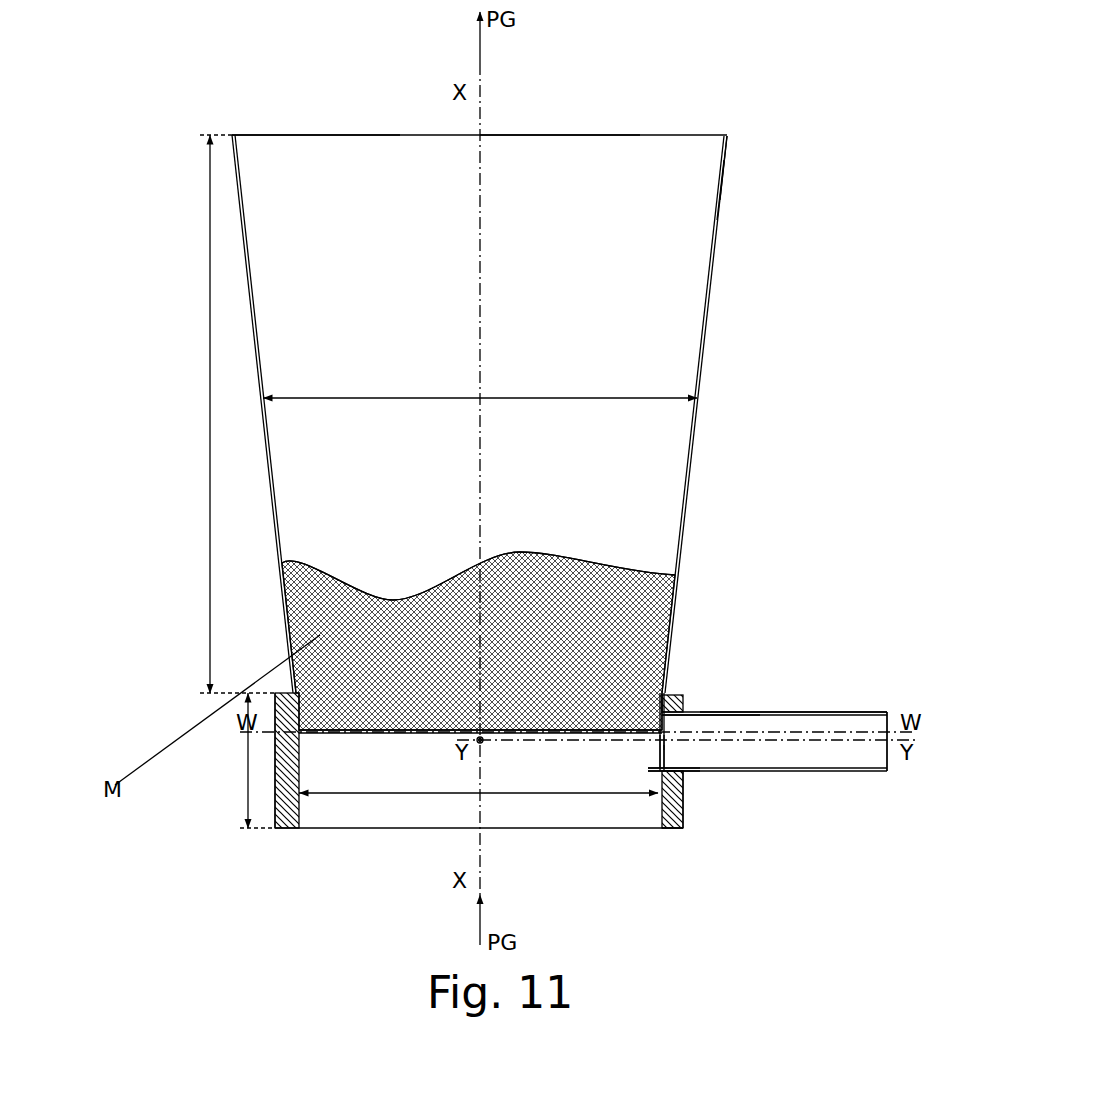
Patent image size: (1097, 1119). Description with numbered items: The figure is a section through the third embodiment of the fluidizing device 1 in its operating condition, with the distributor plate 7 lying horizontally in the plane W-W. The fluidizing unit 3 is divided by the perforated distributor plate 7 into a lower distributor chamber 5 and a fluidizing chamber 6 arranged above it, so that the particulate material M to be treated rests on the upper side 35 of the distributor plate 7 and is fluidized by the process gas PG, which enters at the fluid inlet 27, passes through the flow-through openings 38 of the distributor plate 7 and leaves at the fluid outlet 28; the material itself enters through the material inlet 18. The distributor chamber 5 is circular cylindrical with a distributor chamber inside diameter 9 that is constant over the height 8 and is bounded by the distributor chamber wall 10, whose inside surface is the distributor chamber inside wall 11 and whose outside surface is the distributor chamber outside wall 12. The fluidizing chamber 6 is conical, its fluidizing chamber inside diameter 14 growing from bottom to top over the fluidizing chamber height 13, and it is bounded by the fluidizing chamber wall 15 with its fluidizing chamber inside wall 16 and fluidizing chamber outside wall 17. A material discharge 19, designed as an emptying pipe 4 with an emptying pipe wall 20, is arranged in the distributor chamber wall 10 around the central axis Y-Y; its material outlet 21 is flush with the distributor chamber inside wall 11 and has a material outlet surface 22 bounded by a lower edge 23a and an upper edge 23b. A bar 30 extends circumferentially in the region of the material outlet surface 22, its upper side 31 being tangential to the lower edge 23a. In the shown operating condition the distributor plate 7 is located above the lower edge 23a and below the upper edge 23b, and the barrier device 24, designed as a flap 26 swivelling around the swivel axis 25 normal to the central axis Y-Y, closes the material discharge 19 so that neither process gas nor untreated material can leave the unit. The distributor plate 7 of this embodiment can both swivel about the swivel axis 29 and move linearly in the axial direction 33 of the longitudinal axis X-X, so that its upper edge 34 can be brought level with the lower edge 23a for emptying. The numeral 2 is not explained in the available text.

The fluidizing device 1 is at (843, 107).
The container body 2 is at (406, 414).
The fluidizing unit 3 is at (724, 530).
The emptying pipe 4 is at (845, 788).
The distributor chamber 5 is at (688, 793).
The fluidizing chamber 6 is at (713, 280).
The distributor plate 7 is at (551, 726).
The height of the distributor chamber 8 is at (236, 760).
The distributor chamber inside diameter 9 is at (478, 780).
The distributor chamber wall 10 is at (676, 831).
The distributor chamber inside wall 11 is at (302, 816).
The distributor chamber outside wall 12 is at (272, 816).
The fluidizing chamber height 13 is at (197, 414).
The fluidizing chamber inside diameter 14 is at (480, 386).
The fluidizing chamber wall 15 is at (724, 179).
The fluidizing chamber inside wall 16 is at (716, 166).
The fluidizing chamber outside wall 17 is at (729, 143).
The material inlet 18 is at (359, 133).
The material discharge 19 is at (823, 709).
The emptying pipe wall 20 is at (874, 712).
The material outlet 21 is at (668, 732).
The material outlet surface 22 is at (656, 750).
The lower edge 23a is at (688, 805).
The upper edge 23b is at (669, 697).
The barrier device 24 is at (668, 756).
The swivel axis 25 is at (669, 717).
The flap 26 is at (666, 745).
The fluid inlet 27 is at (551, 830).
The fluid outlet 28 is at (582, 133).
The swivel axis 29 is at (478, 742).
The bar 30 is at (651, 774).
The upper side of the bar 31 is at (654, 766).
The axial direction 33 is at (483, 744).
The upper edge of the distributor plate 34 is at (657, 727).
The upper side of the distributor plate 35 is at (403, 727).
The flow-through openings 38 is at (522, 736).